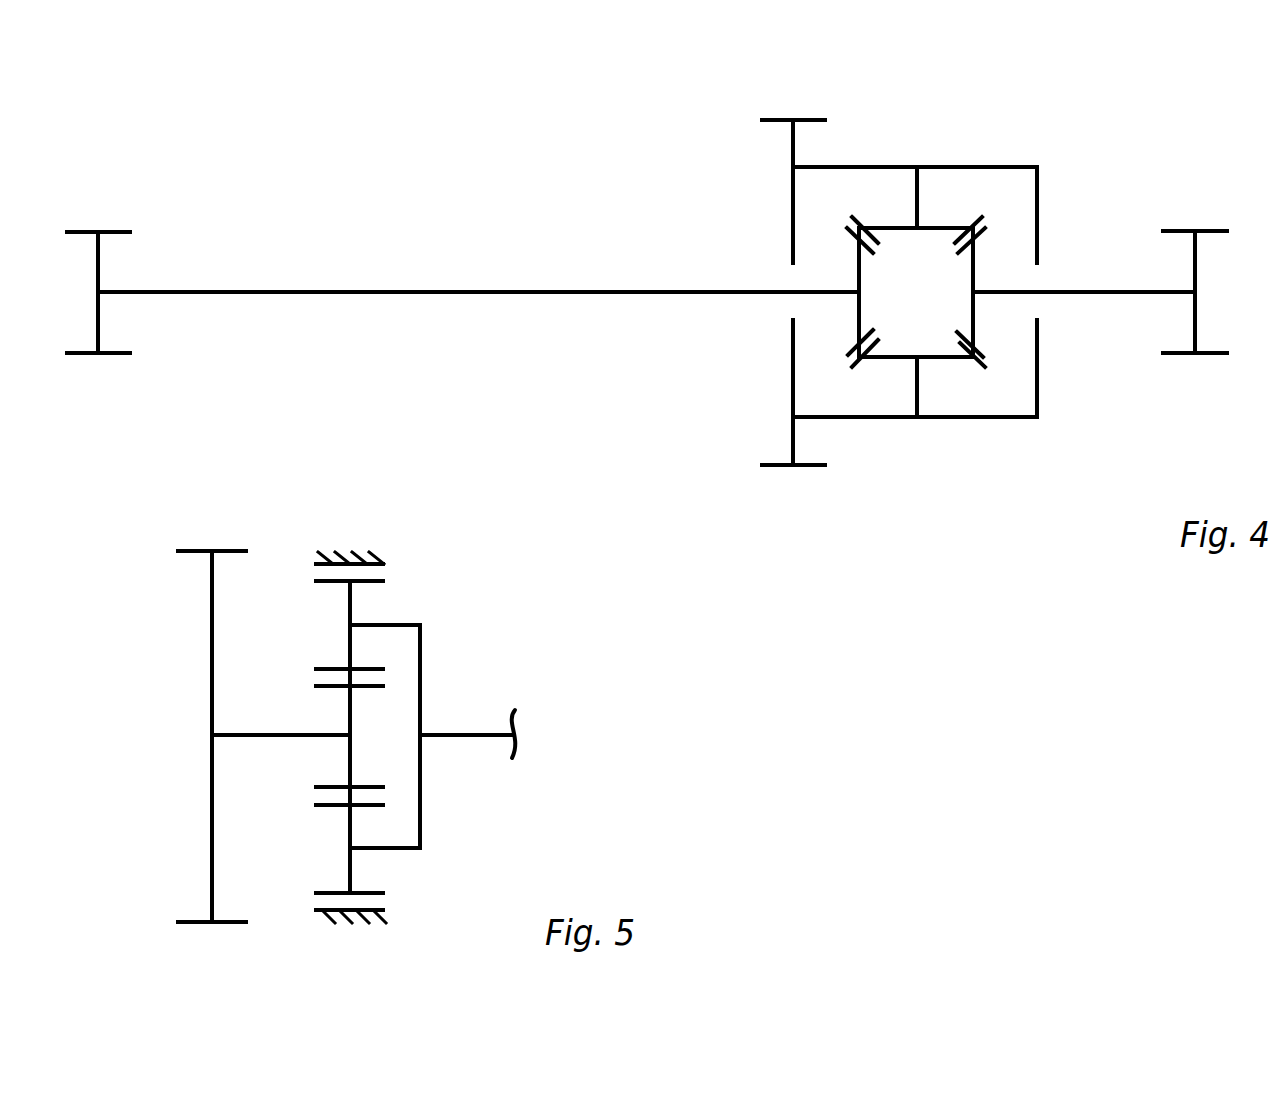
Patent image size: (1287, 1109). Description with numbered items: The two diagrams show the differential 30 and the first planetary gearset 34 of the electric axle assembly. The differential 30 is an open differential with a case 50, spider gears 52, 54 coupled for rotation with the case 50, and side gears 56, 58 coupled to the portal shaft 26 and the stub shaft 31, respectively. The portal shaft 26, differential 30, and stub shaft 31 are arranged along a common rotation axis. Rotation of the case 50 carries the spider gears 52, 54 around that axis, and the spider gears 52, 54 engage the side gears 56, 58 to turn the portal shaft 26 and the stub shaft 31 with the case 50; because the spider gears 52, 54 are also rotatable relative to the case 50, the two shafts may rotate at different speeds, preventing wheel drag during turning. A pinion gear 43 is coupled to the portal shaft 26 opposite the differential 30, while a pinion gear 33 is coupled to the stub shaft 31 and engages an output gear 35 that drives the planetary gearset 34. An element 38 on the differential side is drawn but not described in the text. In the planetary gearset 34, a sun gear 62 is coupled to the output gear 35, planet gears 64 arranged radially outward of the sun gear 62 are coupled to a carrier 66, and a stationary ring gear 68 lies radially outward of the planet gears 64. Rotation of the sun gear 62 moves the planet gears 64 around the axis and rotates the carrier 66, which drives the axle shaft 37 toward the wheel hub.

In FIG. 4, the portal shaft 26 is at (352, 280).
In FIG. 4, the differential 30 is at (1042, 130).
In FIG. 4, the stub shaft 31 is at (1101, 303).
In FIG. 4, the pinion gear 33 is at (1197, 364).
In FIG. 5, the first planetary gearset 34 is at (400, 709).
In FIG. 5, the output gear 35 is at (160, 903).
In FIG. 5, the axle shaft 37 is at (490, 747).
In FIG. 4, the input gear of differential 38 is at (745, 118).
In FIG. 4, the pinion gear 43 is at (120, 364).
In FIG. 4, the case 50 is at (909, 264).
In FIG. 4, the spider gear 52 is at (887, 214).
In FIG. 4, the spider gear 54 is at (948, 372).
In FIG. 4, the side gear 56 is at (843, 268).
In FIG. 4, the side gear 58 is at (987, 272).
In FIG. 5, the sun gear 62 is at (304, 683).
In FIG. 5, the planet gear 64 is at (394, 585).
In FIG. 5, the carrier 66 is at (427, 666).
In FIG. 5, the ring gear 68 is at (390, 905).